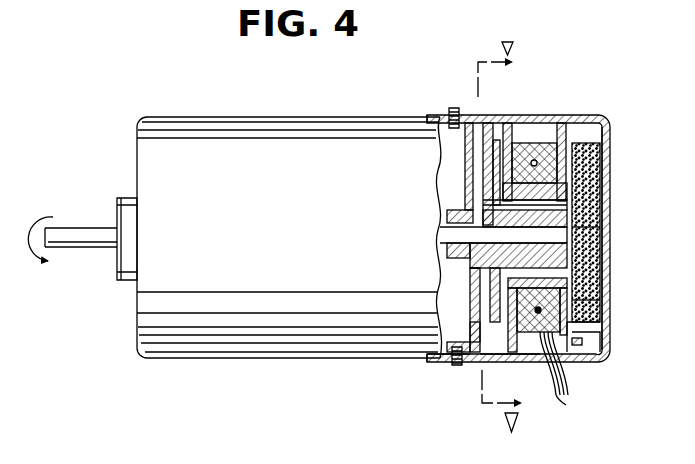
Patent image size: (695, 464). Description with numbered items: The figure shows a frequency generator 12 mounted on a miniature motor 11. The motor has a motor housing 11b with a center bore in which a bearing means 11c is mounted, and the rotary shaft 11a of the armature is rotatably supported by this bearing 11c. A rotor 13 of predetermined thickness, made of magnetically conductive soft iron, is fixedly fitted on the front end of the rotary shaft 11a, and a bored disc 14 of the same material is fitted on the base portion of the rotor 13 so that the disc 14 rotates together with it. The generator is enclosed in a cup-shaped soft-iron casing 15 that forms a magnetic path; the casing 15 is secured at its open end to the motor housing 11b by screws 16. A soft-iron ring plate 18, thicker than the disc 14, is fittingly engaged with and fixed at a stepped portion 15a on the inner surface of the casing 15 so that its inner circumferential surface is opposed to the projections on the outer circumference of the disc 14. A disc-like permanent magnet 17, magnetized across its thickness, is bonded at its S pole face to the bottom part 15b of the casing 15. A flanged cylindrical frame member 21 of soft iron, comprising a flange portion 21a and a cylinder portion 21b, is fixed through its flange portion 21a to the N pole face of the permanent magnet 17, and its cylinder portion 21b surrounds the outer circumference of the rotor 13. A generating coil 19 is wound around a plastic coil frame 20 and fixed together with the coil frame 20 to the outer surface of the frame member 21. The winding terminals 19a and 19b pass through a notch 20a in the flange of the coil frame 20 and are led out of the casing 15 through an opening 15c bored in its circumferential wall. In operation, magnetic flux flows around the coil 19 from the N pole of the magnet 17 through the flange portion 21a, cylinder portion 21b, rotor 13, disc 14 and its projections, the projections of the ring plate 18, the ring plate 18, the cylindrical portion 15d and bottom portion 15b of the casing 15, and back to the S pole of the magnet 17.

The miniature motor 11 is at (293, 221).
The rotary shaft 11a is at (82, 232).
The motor housing 11b is at (435, 115).
The bearing means 11c is at (447, 250).
The frequency generator 12 is at (580, 112).
The rotor 13 is at (567, 257).
The bored disc 14 is at (490, 284).
The casing 15 is at (608, 345).
The stepped portion 15a is at (503, 358).
The bottom part 15b is at (608, 226).
The opening 15c is at (537, 362).
The cylindrical portion 15d is at (512, 118).
The screws 16 is at (455, 108).
The permanent magnet 17 is at (578, 292).
The ring plate 18 is at (478, 323).
The generating coil 19 is at (528, 150).
The winding terminal 19a is at (553, 380).
The winding terminal 19b is at (560, 377).
The coil frame 20 is at (570, 322).
The notch 20a is at (580, 344).
The flanged cylindrical frame member 21 is at (575, 272).
The flange portion 21a is at (590, 290).
The cylinder portion 21b is at (470, 275).